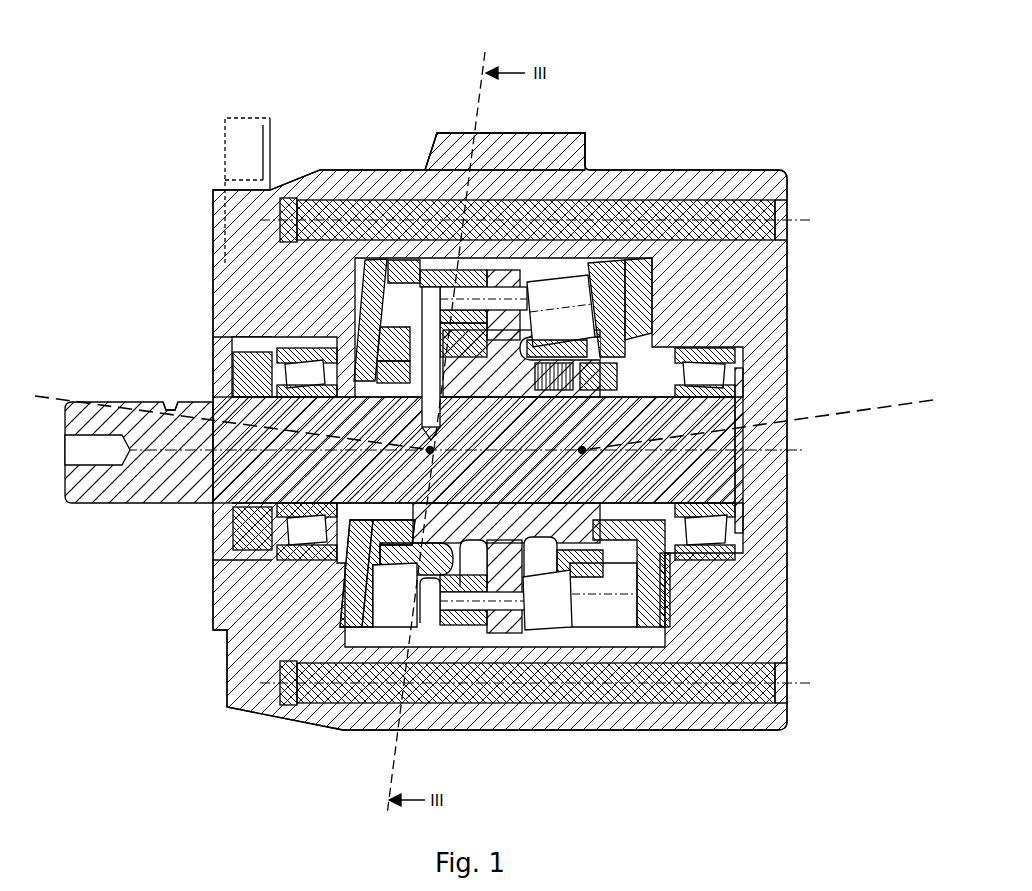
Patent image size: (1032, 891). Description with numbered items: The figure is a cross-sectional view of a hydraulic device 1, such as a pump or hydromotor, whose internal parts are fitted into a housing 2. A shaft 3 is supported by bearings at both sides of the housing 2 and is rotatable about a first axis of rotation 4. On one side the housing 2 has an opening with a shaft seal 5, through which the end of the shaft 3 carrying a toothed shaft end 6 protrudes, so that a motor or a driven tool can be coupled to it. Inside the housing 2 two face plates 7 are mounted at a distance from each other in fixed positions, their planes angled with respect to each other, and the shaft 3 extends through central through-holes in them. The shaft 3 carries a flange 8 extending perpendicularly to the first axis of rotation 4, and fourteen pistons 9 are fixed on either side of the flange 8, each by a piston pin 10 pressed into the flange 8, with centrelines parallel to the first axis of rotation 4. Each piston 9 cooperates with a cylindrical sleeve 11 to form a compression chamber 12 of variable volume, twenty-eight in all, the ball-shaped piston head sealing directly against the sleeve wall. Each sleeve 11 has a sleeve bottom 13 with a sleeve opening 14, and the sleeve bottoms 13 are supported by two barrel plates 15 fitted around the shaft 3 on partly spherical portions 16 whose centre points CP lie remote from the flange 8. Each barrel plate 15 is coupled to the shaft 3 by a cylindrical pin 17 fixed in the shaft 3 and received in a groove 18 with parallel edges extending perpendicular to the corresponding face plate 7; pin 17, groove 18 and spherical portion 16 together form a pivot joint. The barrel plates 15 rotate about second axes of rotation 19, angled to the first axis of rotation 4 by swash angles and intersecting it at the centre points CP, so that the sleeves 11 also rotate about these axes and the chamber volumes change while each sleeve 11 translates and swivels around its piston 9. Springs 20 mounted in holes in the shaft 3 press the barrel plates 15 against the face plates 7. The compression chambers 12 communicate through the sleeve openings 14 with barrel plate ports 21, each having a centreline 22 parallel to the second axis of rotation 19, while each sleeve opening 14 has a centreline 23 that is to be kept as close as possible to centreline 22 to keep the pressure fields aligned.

The hydraulic device 1 is at (628, 103).
The housing 2 is at (767, 283).
The shaft 3 is at (190, 405).
The first axis of rotation 4 is at (58, 450).
The shaft seal 5 is at (238, 548).
The toothed shaft end 6 is at (108, 505).
The face plates 7 is at (647, 347).
The flange 8 is at (508, 625).
The pistons 9 is at (455, 290).
The piston pin 10 is at (480, 290).
The cylindrical sleeve 11 is at (572, 283).
The compression chamber 12 is at (412, 607).
The sleeve bottom 13 is at (387, 610).
The sleeve opening 14 is at (372, 615).
The barrel plates 15 is at (608, 322).
The partly spherical portions 16 is at (632, 333).
The pin 17 is at (380, 362).
The groove 18 is at (385, 325).
The second axes of rotation 19 is at (207, 415).
The springs 20 is at (770, 212).
The barrel plate ports 21 is at (410, 275).
The centreline 22 is at (415, 290).
The centreline 23 is at (422, 625).
The centre points CP is at (430, 450).